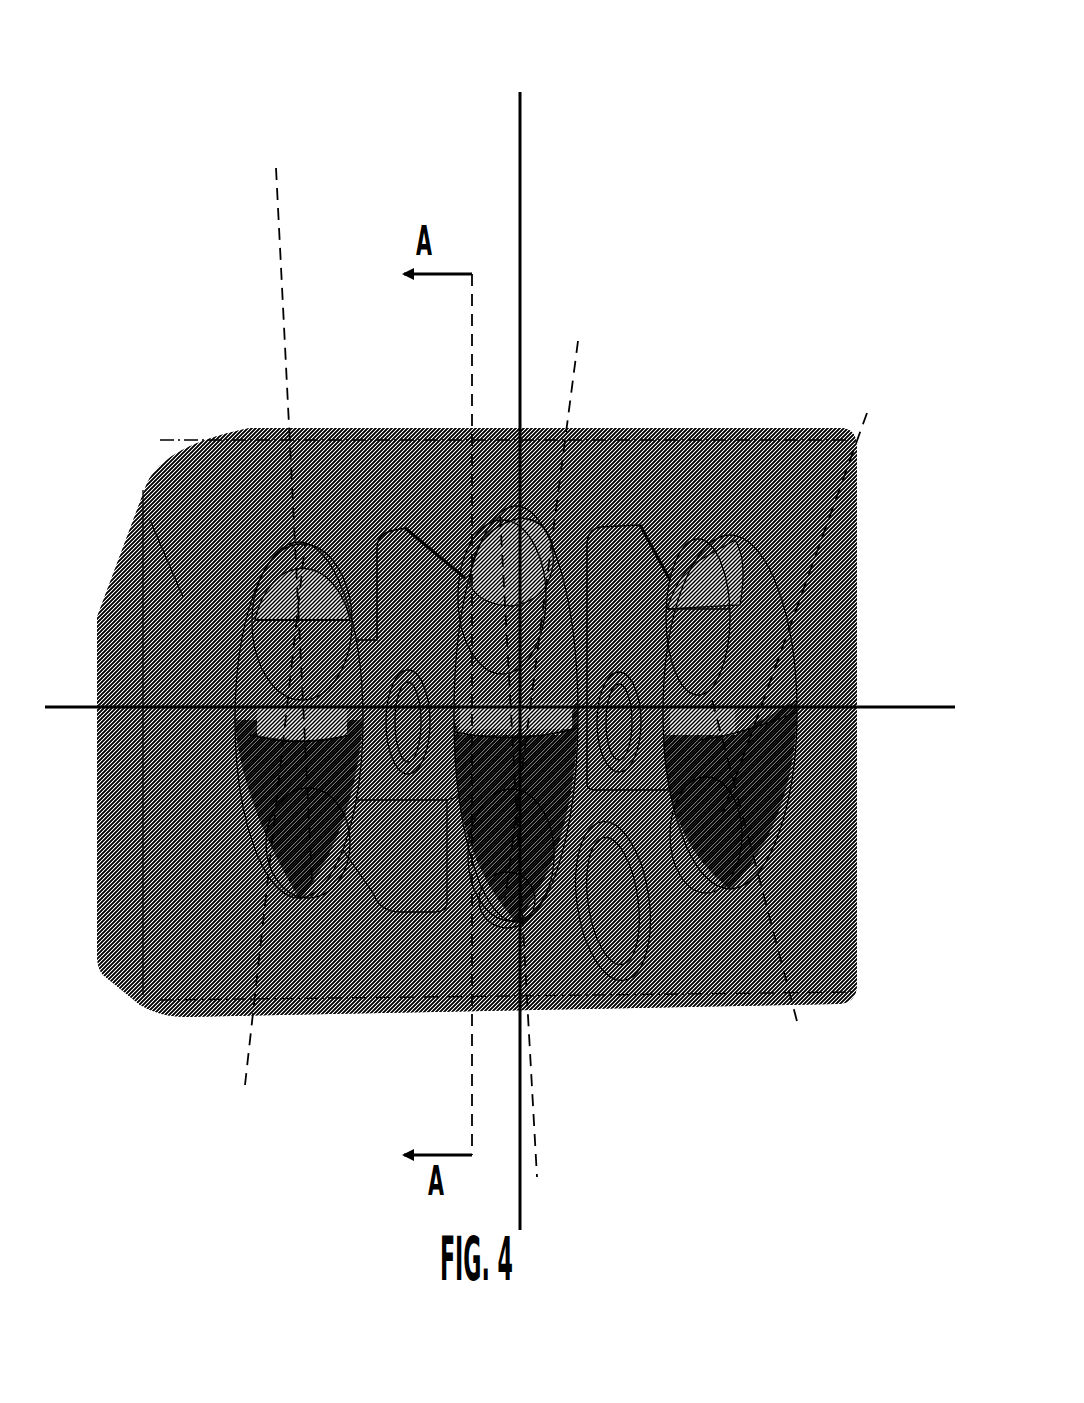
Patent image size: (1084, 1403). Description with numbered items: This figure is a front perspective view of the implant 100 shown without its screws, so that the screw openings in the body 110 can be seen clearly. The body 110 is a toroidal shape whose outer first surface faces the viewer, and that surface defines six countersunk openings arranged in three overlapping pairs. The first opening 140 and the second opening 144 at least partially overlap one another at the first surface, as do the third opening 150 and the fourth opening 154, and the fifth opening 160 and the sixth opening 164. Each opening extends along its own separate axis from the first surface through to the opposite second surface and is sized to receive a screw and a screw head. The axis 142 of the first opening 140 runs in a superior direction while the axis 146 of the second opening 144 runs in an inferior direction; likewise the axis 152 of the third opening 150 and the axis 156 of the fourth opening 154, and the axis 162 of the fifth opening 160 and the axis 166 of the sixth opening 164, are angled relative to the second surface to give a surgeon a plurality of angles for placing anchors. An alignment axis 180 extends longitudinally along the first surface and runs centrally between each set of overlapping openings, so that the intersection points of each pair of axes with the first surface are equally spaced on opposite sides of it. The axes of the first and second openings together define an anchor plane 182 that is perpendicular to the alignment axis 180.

The implant 100 is at (176, 250).
The body 110 is at (137, 510).
The first opening 140 is at (527, 528).
The axis of the first opening 142 is at (533, 1137).
The second opening 144 is at (547, 773).
The axis of the second opening 146 is at (574, 406).
The third opening 150 is at (322, 560).
The axis of the third opening 152 is at (242, 1087).
The fourth opening 154 is at (333, 843).
The axis of the fourth opening 156 is at (283, 270).
The fifth opening 160 is at (730, 558).
The axis of the fifth opening 162 is at (797, 1028).
The sixth opening 164 is at (712, 870).
The axis of the sixth opening 166 is at (860, 458).
The alignment axis 180 is at (95, 715).
The anchor plane 182 is at (521, 165).